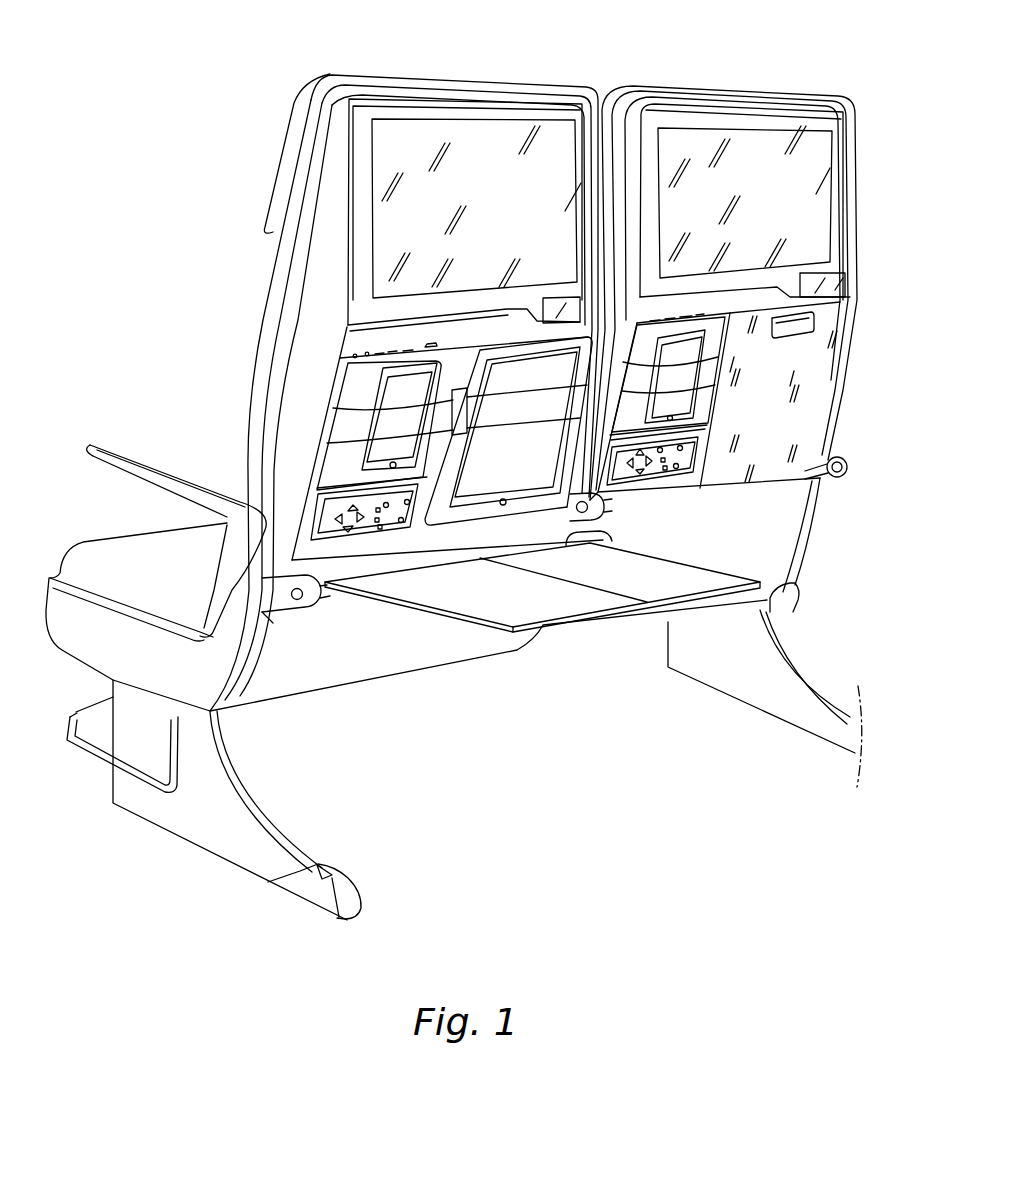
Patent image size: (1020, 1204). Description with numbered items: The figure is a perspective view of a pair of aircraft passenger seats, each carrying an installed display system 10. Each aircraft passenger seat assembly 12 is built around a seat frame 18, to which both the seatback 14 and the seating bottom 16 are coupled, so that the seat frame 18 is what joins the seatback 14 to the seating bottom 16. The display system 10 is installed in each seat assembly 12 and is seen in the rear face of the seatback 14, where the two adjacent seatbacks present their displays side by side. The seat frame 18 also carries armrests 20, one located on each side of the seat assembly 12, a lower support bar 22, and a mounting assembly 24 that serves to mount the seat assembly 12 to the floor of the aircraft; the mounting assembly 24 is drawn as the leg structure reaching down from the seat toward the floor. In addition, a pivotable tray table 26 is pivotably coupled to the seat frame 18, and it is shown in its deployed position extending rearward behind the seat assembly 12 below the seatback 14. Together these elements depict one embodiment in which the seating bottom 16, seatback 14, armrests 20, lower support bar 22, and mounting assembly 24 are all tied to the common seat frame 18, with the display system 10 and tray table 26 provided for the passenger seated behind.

The display system 10 is at (507, 94).
The aircraft passenger seat assembly 12 is at (432, 392).
The seatback 14 is at (272, 297).
The seating bottom 16 is at (88, 540).
The seat frame 18 is at (105, 656).
The armrest 20 is at (102, 437).
The lower support bar 22 is at (98, 760).
The mounting assembly 24 is at (226, 862).
The pivotable tray table 26 is at (646, 586).